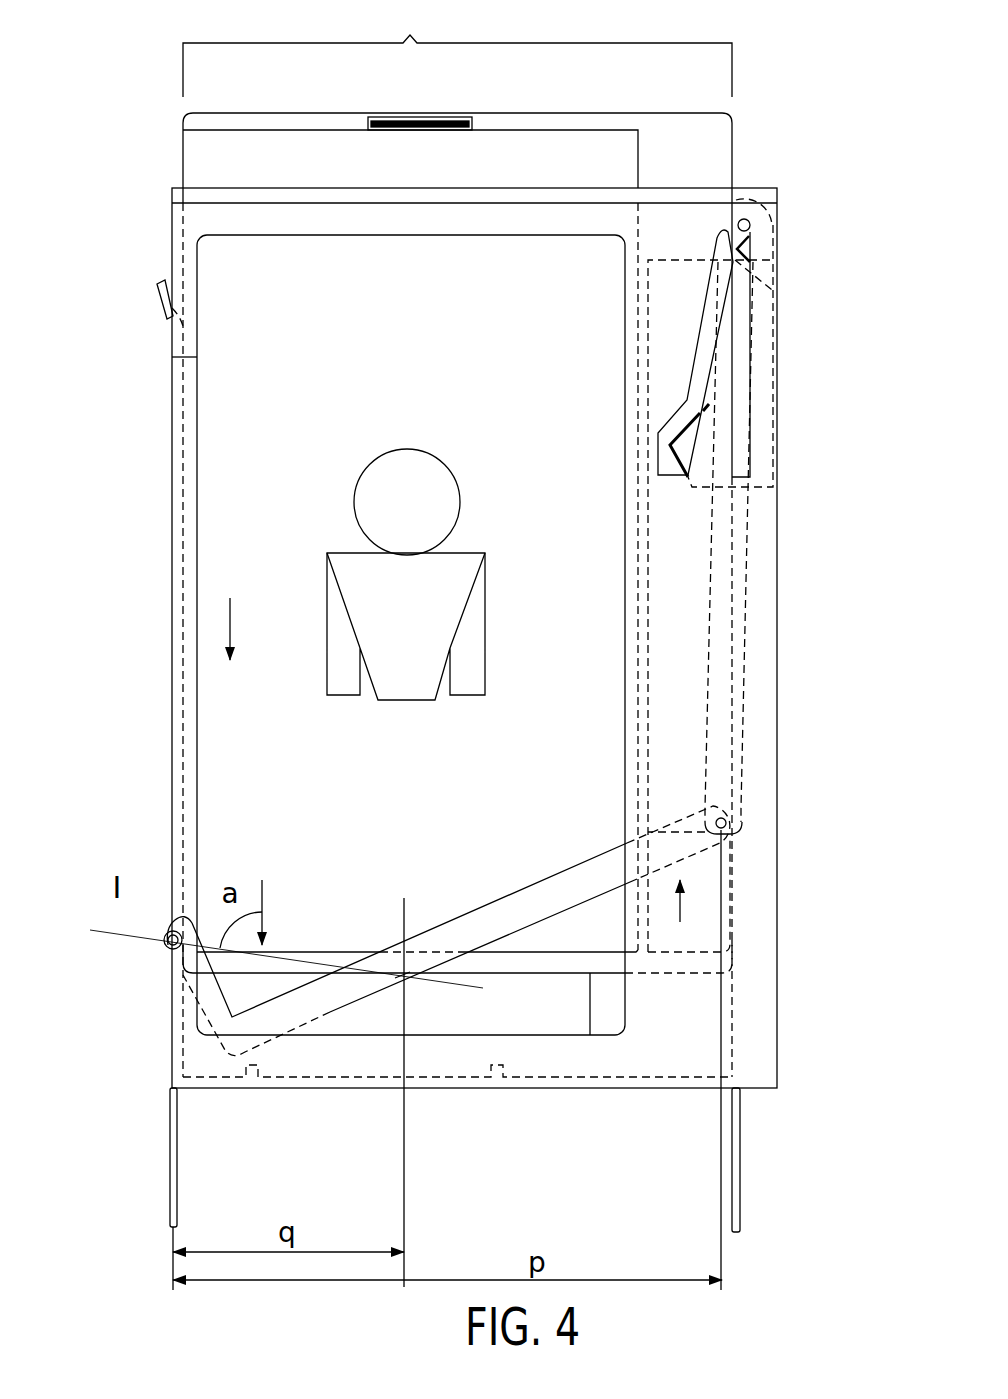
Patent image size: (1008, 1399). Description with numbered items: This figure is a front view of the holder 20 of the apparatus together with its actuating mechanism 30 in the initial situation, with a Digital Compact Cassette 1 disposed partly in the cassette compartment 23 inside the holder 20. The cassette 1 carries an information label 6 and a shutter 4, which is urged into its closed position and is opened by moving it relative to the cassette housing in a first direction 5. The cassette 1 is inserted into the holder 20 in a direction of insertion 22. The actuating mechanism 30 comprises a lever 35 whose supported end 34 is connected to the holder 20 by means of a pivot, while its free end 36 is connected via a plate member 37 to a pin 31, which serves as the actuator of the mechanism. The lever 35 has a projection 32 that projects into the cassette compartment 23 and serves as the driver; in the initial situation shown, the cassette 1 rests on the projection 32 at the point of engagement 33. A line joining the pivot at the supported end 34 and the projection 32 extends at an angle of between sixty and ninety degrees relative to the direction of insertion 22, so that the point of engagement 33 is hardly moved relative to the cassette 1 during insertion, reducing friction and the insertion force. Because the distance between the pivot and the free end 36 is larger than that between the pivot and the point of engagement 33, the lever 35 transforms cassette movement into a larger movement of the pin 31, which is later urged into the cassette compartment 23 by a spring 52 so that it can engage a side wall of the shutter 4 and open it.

The Digital Compact Cassette 1 is at (177, 116).
The shutter 4 is at (683, 258).
The first direction 5 is at (244, 627).
The information label 6 is at (245, 128).
The holder 20 is at (143, 378).
The direction of insertion 22 is at (264, 893).
The cassette compartment 23 is at (457, 48).
The actuating mechanism 30 is at (680, 917).
The pin 31 is at (760, 224).
The projection 32 is at (398, 978).
The point of engagement 33 is at (403, 1077).
The supported end 34 is at (165, 942).
The lever 35 is at (513, 892).
The free end 36 is at (690, 822).
The plate member 37 is at (710, 651).
The spring 52 is at (777, 370).